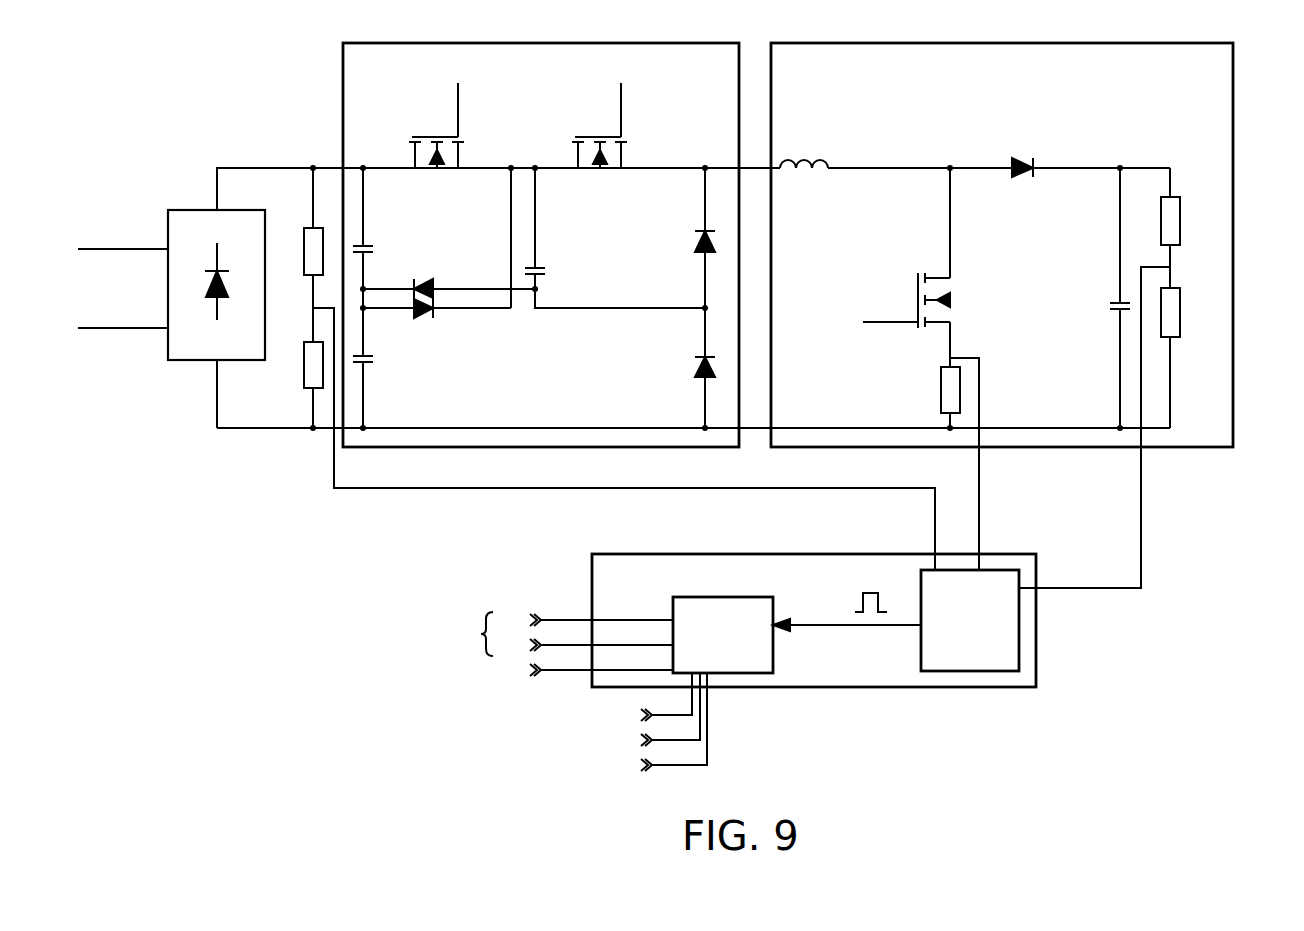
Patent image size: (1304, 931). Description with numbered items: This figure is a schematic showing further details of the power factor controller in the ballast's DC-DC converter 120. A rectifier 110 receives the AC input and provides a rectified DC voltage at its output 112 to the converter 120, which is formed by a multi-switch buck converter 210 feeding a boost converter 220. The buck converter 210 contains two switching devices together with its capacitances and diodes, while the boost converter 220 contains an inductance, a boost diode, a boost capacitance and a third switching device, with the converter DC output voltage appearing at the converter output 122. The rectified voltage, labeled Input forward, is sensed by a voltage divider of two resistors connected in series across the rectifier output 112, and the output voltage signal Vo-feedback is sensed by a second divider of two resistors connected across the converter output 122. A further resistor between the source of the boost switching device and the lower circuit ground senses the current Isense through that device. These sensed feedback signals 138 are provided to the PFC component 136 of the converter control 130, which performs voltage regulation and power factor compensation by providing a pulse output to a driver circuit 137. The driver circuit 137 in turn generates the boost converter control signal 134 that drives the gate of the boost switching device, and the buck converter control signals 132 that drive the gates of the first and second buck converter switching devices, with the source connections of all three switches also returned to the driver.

The rectifier 110 is at (168, 235).
The rectifier output 112 is at (200, 166).
The DC-DC converter 120 is at (198, 72).
The converter output 122 is at (1204, 198).
The controller 130 is at (592, 570).
The buck converter control signals 132 is at (481, 634).
The boost converter control signal 134 is at (565, 672).
The power factor control component 136 is at (1019, 620).
The driver circuit 137 is at (673, 608).
The feedback signals 138 is at (1178, 503).
The buck converter 210 is at (343, 63).
The boost converter 220 is at (778, 43).